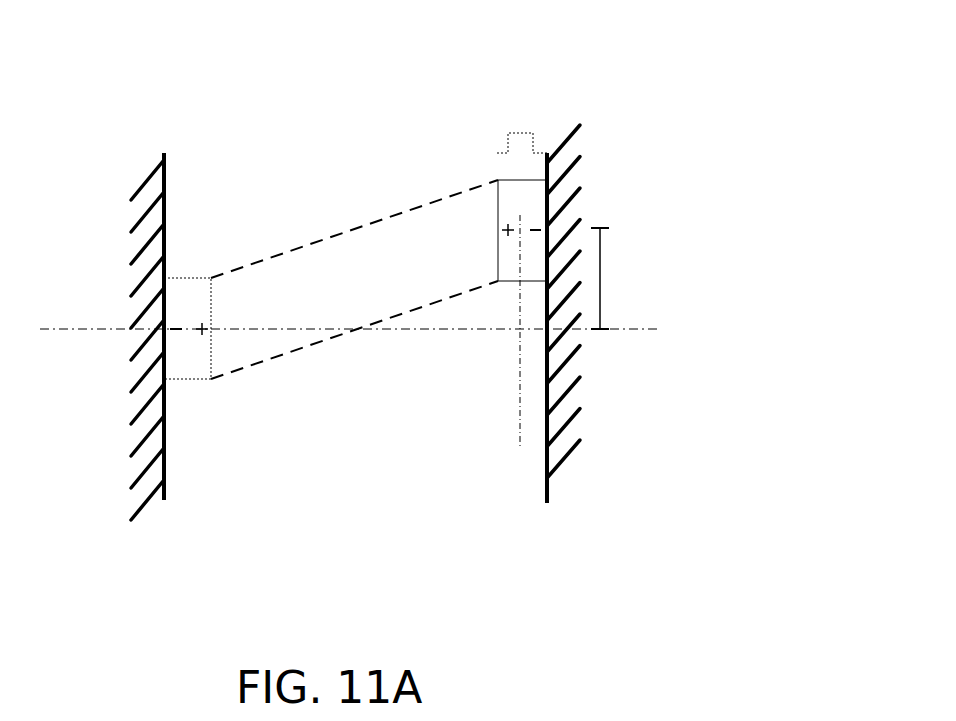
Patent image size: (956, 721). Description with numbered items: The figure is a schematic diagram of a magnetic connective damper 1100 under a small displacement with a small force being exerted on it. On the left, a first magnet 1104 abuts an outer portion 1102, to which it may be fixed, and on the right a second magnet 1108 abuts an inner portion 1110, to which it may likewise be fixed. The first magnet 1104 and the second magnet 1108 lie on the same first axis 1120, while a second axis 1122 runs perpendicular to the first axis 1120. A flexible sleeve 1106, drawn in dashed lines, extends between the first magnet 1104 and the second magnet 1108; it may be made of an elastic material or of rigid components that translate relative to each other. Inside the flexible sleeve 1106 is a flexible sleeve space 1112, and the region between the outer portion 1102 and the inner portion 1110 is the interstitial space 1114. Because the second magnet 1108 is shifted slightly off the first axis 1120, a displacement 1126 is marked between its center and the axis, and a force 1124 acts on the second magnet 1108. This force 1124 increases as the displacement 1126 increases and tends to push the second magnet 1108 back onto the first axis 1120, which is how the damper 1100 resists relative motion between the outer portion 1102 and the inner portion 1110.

The beam mounting system 1100 is at (720, 505).
The outer portion 1102 is at (163, 152).
The first magnet 1104 is at (198, 278).
The flexible sleeve 1106 is at (398, 212).
The second magnet 1108 is at (500, 180).
The inner portion 1110 is at (518, 178).
The flexible sleeve space 1112 is at (275, 310).
The interstitial space 1114 is at (330, 406).
The first axis 1120 is at (303, 329).
The second axis 1122 is at (518, 355).
The force 1124 is at (512, 133).
The displacement 1126 is at (600, 228).